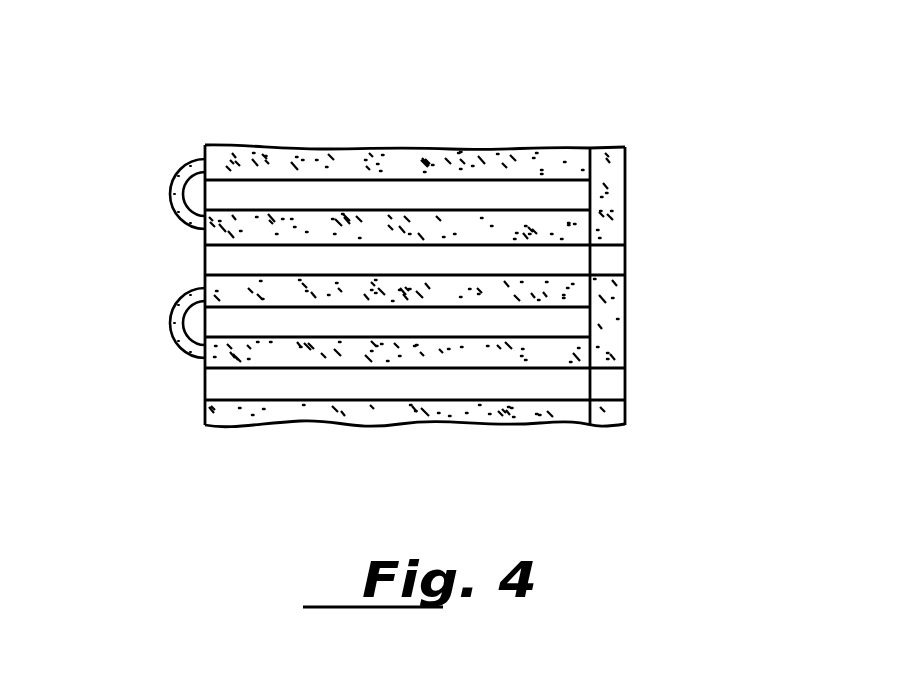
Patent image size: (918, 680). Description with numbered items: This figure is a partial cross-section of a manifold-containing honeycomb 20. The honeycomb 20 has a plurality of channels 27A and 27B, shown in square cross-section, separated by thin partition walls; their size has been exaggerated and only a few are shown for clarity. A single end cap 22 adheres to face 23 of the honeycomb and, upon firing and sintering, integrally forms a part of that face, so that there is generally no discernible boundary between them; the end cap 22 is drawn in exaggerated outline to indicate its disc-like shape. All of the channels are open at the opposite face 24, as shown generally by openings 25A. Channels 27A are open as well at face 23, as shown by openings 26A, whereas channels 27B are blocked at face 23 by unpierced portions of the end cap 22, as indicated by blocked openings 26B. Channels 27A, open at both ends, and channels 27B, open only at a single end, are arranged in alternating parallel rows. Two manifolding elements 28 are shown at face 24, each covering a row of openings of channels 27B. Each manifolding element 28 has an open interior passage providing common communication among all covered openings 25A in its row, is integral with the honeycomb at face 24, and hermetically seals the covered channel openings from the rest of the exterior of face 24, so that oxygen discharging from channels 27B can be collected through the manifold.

The honeycomb 20 is at (490, 123).
The end cap 22 is at (618, 146).
The face 23 is at (618, 310).
The face 24 is at (203, 415).
The openings 25A is at (205, 325).
The openings 26A is at (612, 263).
The blocked openings 26B is at (623, 192).
The channels 27A is at (398, 262).
The channels 27B is at (315, 193).
The manifolding elements 28 is at (169, 189).